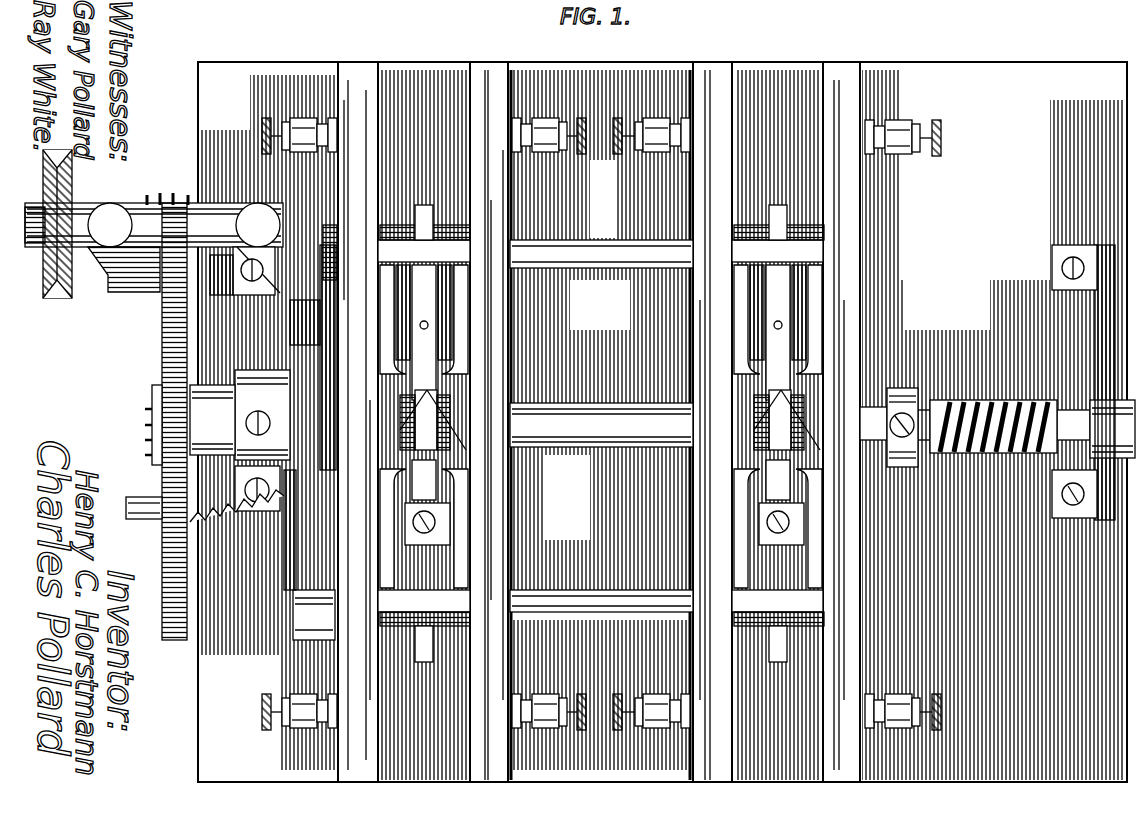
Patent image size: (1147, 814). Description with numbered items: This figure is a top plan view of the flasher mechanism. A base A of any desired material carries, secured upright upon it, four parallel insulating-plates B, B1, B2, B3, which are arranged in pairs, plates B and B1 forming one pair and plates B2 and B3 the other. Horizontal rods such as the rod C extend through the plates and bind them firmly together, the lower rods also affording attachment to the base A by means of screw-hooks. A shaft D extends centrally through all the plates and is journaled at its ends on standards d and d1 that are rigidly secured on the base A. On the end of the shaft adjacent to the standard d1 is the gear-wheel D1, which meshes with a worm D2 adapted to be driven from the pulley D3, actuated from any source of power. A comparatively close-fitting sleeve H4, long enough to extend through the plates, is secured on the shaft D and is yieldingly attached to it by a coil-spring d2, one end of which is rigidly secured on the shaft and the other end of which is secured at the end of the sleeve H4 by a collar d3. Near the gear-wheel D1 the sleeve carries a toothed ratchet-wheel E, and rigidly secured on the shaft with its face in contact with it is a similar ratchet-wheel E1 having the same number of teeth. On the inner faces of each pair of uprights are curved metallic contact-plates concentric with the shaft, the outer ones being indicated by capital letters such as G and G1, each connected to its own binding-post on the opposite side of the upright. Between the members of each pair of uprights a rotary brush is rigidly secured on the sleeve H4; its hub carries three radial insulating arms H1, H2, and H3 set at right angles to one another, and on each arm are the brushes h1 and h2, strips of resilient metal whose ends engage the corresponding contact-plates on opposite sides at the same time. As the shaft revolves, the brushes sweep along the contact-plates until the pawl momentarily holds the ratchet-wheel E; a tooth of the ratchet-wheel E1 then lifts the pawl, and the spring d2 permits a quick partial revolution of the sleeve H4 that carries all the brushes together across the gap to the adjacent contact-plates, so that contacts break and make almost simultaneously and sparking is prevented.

The base A is at (252, 80).
The insulating-plate B is at (355, 80).
The insulating-plate B1 is at (487, 80).
The insulating-plate B2 is at (705, 80).
The insulating-plate B3 is at (838, 82).
The rod C is at (606, 264).
The shaft D is at (1092, 400).
The gear-wheel D1 is at (160, 340).
The worm D2 is at (145, 430).
The pulley D3 is at (58, 302).
The standard d is at (1094, 340).
The standard d1 is at (300, 320).
The spring d2 is at (992, 400).
The collar d3 is at (900, 390).
The ratchet-wheel E is at (278, 288).
The ratchet-wheel E1 is at (290, 372).
The outer contact-plate G is at (382, 300).
The outer contact-plate G1 is at (382, 535).
The radial arm H1 is at (424, 206).
The radial arm H2 is at (780, 372).
The radial arm H3 is at (424, 645).
The main shaft H4 is at (800, 425).
The brush h1 is at (437, 320).
The brush h2 is at (426, 226).